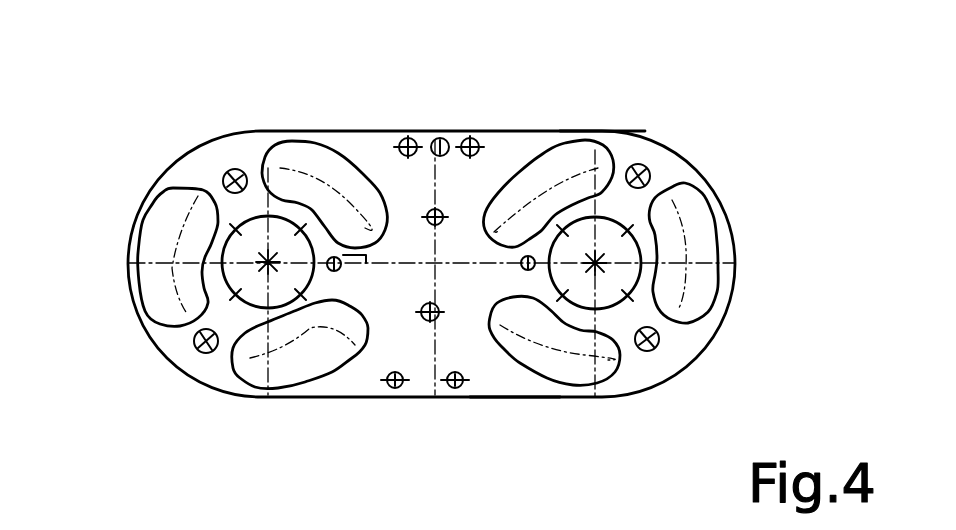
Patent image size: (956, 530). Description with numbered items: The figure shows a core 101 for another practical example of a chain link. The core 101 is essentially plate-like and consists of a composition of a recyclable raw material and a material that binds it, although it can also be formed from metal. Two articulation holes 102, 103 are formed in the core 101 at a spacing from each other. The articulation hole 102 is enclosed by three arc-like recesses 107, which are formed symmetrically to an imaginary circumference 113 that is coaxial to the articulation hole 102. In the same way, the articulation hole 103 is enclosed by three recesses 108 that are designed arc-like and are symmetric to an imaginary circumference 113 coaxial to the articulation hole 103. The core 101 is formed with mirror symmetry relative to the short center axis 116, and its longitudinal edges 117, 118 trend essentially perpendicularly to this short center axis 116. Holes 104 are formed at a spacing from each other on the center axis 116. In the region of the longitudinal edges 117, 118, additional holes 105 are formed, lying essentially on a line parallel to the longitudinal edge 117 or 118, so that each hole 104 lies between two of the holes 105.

The core 101 is at (541, 130).
The articulation hole 102 is at (627, 224).
The articulation hole 103 is at (253, 297).
The holes 104 is at (438, 163).
The additional holes 105 is at (404, 137).
The arc-like recesses 107 is at (608, 157).
The recesses 108 is at (163, 228).
The imaginary circumference 113 is at (193, 333).
The short center axis 116 is at (440, 137).
The longitudinal edge 117 is at (602, 130).
The longitudinal edge 118 is at (511, 398).